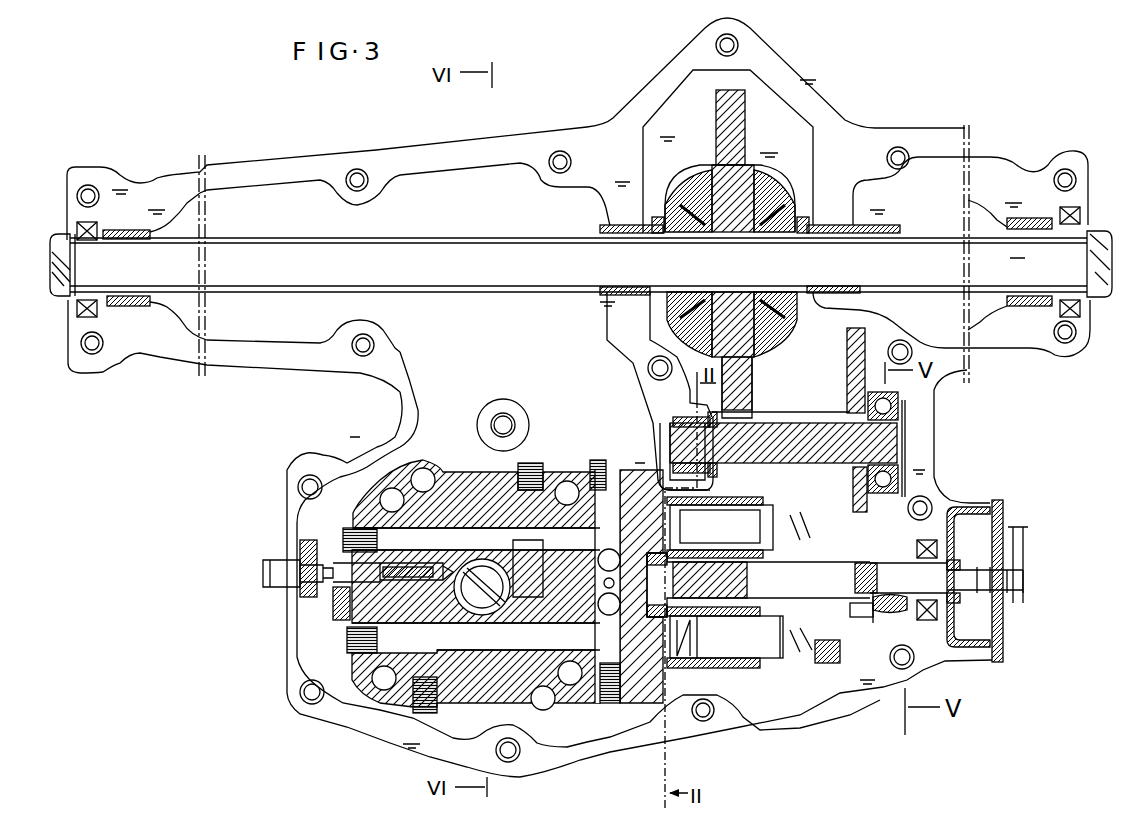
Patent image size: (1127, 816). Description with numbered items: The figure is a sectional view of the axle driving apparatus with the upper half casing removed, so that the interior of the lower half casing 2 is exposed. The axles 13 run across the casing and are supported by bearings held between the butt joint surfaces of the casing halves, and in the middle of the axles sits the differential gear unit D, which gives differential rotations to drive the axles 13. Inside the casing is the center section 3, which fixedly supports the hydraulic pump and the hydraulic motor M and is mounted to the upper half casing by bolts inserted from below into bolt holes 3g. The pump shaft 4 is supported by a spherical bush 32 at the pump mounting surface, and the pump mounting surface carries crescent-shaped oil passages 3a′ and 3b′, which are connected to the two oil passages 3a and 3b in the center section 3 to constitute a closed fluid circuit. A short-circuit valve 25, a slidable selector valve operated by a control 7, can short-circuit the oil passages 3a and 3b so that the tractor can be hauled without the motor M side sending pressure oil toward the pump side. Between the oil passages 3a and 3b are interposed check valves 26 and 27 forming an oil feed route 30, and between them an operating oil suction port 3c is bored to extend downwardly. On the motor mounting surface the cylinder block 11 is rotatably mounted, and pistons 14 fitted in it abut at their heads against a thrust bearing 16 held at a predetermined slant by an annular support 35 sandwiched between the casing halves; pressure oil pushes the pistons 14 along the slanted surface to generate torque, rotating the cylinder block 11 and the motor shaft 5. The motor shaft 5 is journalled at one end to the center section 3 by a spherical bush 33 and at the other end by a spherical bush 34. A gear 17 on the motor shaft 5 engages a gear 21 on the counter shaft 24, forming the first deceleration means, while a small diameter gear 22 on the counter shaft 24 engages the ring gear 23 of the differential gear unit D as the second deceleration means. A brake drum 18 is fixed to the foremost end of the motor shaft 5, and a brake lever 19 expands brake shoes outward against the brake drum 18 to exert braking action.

The lower half casing 2 is at (497, 137).
The axles 13 is at (457, 240).
The differential gear unit D is at (697, 168).
The spherical bush 32 is at (447, 462).
The center section 3 is at (474, 472).
The bolt holes 3g is at (390, 490).
The oil passage 3a is at (514, 546).
The oil passage 3b is at (502, 641).
The crescent-shaped oil passage 3a′ is at (575, 614).
The crescent-shaped oil passage 3b′ is at (470, 702).
The pump shaft 4 is at (487, 700).
The oil feed route 30 is at (600, 470).
The check valve 27 is at (603, 612).
The check valve 26 is at (600, 570).
The short-circuit valve 25 is at (337, 557).
The control 7 is at (263, 570).
The operating oil suction port 3c is at (758, 585).
The motor shaft 5 is at (897, 560).
The brake lever 19 is at (1025, 535).
The brake drum 18 is at (977, 640).
The spherical bush 34 is at (893, 603).
The thrust bearing 16 is at (800, 515).
The pistons 14 is at (744, 656).
The hydraulic motor M is at (733, 677).
The cylinder block 11 is at (765, 655).
The annular support 35 is at (830, 652).
The gear 17 is at (857, 608).
The spherical bush 33 is at (665, 672).
The counter shaft 24 is at (804, 458).
The small diameter gear 22 is at (800, 417).
The ring gear 23 is at (745, 373).
The gear 21 is at (847, 376).